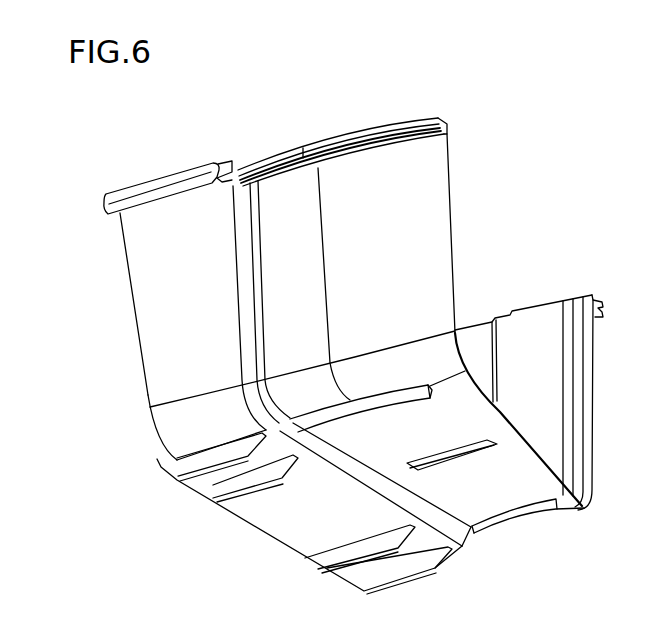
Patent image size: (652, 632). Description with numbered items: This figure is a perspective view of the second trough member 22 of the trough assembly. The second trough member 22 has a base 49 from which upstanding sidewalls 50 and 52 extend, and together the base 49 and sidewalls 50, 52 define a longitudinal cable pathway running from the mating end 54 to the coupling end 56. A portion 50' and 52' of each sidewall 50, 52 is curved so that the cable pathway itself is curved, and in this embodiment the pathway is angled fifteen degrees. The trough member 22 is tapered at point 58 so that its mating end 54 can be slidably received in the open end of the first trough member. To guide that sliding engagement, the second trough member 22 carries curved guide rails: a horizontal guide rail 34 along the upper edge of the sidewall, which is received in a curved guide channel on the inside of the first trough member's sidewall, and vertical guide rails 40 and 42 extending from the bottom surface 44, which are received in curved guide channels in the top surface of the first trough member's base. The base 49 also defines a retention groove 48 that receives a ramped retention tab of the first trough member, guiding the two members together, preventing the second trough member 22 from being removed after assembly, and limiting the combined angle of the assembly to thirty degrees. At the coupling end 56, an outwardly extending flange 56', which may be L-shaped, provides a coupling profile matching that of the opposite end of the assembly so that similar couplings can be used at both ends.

The second trough member 22 is at (500, 156).
The guide rail 34 is at (405, 122).
The vertical guide rail 40 is at (537, 510).
The vertical guide rail 42 is at (378, 405).
The bottom surface 44 is at (497, 488).
The retention groove 48 is at (447, 460).
The base 49 is at (270, 505).
The sidewall 50 is at (275, 395).
The curved portion of sidewall 50' is at (344, 244).
The sidewall 52 is at (603, 402).
The curved portion of sidewall 52' is at (523, 324).
The mating end 54 is at (452, 230).
The coupling end 56 is at (106, 304).
The flange 56' is at (135, 203).
The taper point 58 is at (240, 198).